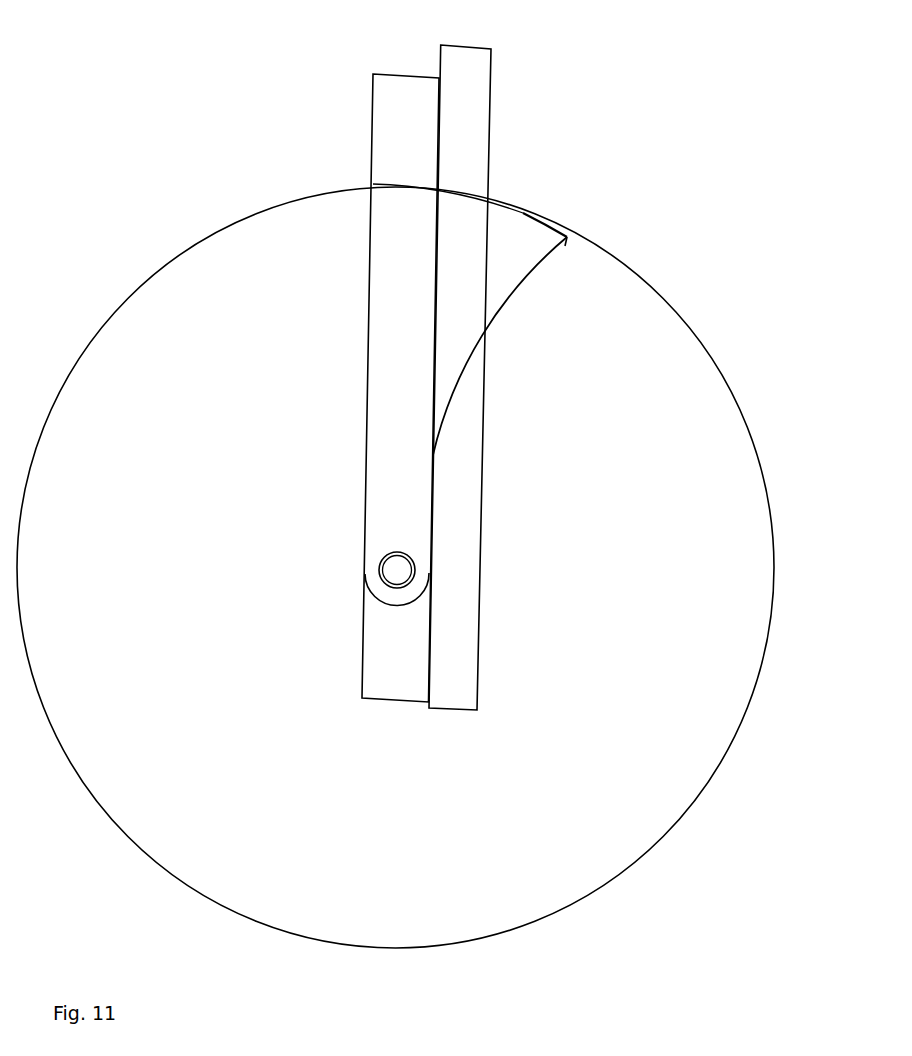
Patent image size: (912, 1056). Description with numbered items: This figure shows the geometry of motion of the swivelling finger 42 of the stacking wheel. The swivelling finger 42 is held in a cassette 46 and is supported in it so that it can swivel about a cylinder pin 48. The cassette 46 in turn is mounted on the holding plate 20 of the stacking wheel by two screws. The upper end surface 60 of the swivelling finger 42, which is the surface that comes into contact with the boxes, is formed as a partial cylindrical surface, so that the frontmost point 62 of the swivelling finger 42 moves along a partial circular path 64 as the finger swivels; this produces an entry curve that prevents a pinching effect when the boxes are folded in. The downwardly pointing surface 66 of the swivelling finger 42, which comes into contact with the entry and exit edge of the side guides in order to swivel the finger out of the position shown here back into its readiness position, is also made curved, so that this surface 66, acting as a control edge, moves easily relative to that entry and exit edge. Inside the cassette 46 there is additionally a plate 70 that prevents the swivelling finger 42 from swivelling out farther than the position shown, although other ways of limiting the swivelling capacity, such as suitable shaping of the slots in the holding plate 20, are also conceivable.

The holding plate 20 is at (472, 97).
The swivelling finger 42 is at (538, 253).
The cassette 46 is at (385, 92).
The cylinder pin 48 is at (397, 570).
The upper end surface 60 is at (537, 215).
The frontmost point 62 is at (567, 237).
The partial circular path 64 is at (173, 257).
The downwardly pointing surface 66 is at (513, 293).
The plate 70 is at (433, 518).